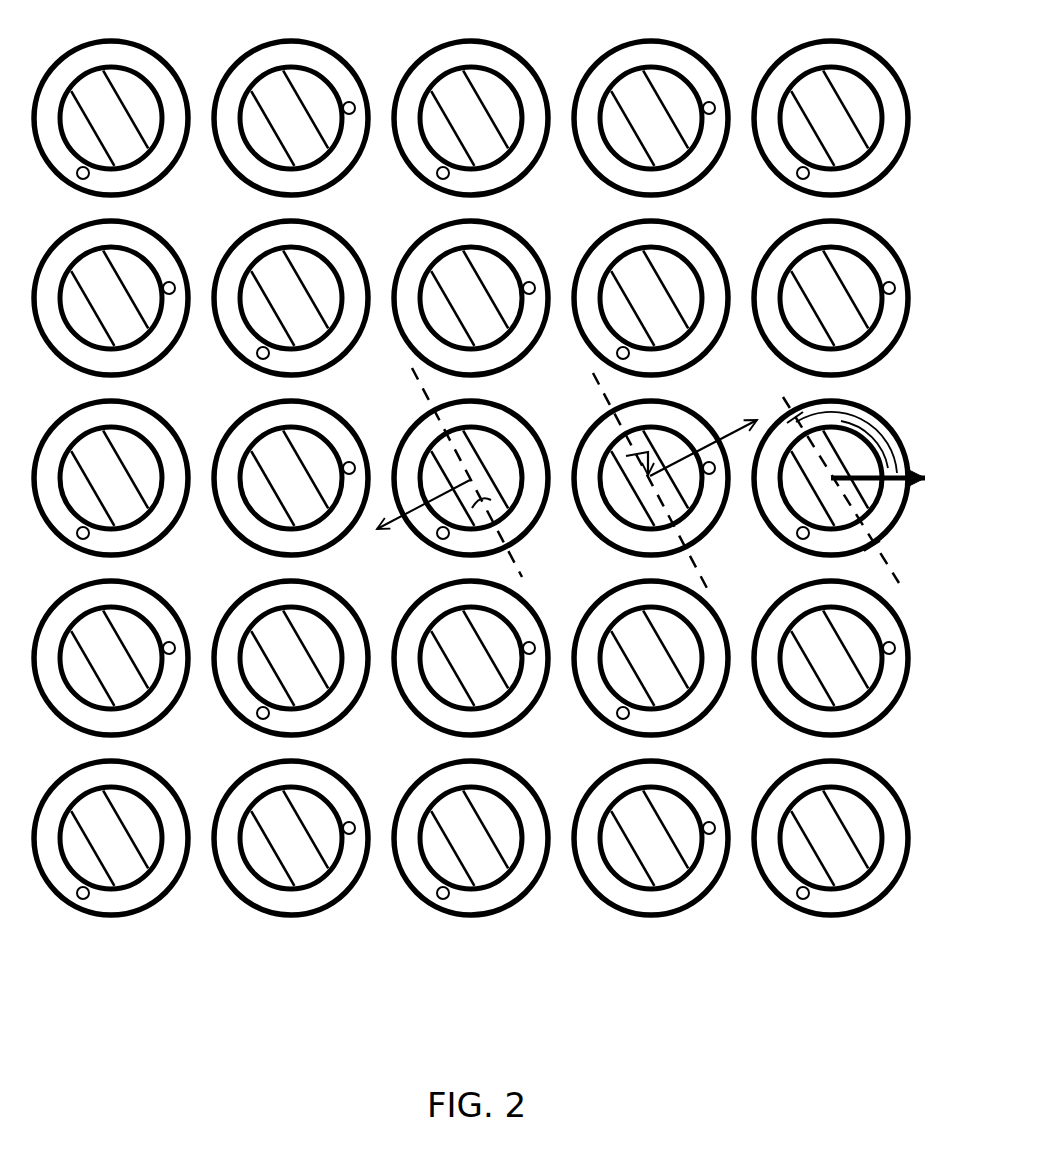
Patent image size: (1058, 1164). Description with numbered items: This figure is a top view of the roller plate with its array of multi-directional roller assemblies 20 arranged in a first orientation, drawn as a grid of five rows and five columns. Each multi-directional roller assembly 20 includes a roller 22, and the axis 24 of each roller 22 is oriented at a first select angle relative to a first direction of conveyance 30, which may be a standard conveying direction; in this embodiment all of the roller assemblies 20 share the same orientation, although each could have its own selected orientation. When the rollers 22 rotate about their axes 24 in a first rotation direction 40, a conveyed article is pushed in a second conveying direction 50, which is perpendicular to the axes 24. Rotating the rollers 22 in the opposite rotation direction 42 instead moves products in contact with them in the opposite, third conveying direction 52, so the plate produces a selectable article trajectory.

The multi-directional roller assembly 20 is at (722, 556).
The roller 22 is at (430, 452).
The axis 24 is at (412, 386).
The first direction of conveyance 30 is at (903, 445).
The first rotation direction 40 is at (648, 445).
The opposite rotation direction 42 is at (487, 492).
The second conveying direction 50 is at (722, 432).
The third conveying direction 52 is at (388, 530).